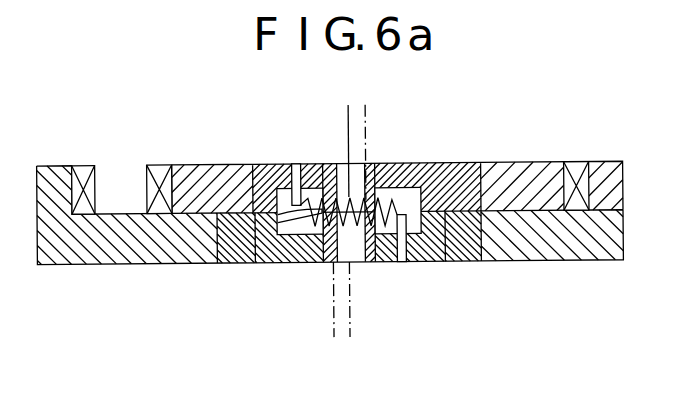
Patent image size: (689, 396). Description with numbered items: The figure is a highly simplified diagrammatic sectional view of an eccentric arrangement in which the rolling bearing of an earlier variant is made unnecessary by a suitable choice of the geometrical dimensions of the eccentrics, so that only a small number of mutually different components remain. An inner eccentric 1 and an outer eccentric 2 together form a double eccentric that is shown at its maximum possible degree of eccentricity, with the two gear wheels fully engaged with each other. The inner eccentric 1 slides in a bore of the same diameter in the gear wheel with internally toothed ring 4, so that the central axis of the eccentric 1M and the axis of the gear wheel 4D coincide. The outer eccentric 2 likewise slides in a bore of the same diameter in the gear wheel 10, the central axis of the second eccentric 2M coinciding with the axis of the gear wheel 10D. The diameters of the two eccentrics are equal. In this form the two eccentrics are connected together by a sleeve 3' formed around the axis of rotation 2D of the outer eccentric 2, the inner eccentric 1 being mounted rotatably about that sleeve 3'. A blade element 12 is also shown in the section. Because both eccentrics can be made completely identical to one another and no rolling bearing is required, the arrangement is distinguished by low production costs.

The inner eccentric 1 is at (297, 264).
The outer eccentric 2 is at (463, 176).
The sleeve 3' is at (371, 232).
The gear wheel with internally toothed ring 4 is at (84, 166).
The gear wheel 10 is at (161, 166).
The blade element 12 is at (287, 217).
The axis of rotation 2D is at (346, 143).
The central axis of the second eccentric 2M is at (404, 152).
The axis of the gear wheel 10D is at (368, 151).
The central axis of the eccentric 1M is at (332, 308).
The axis of the gear wheel 4D is at (330, 318).